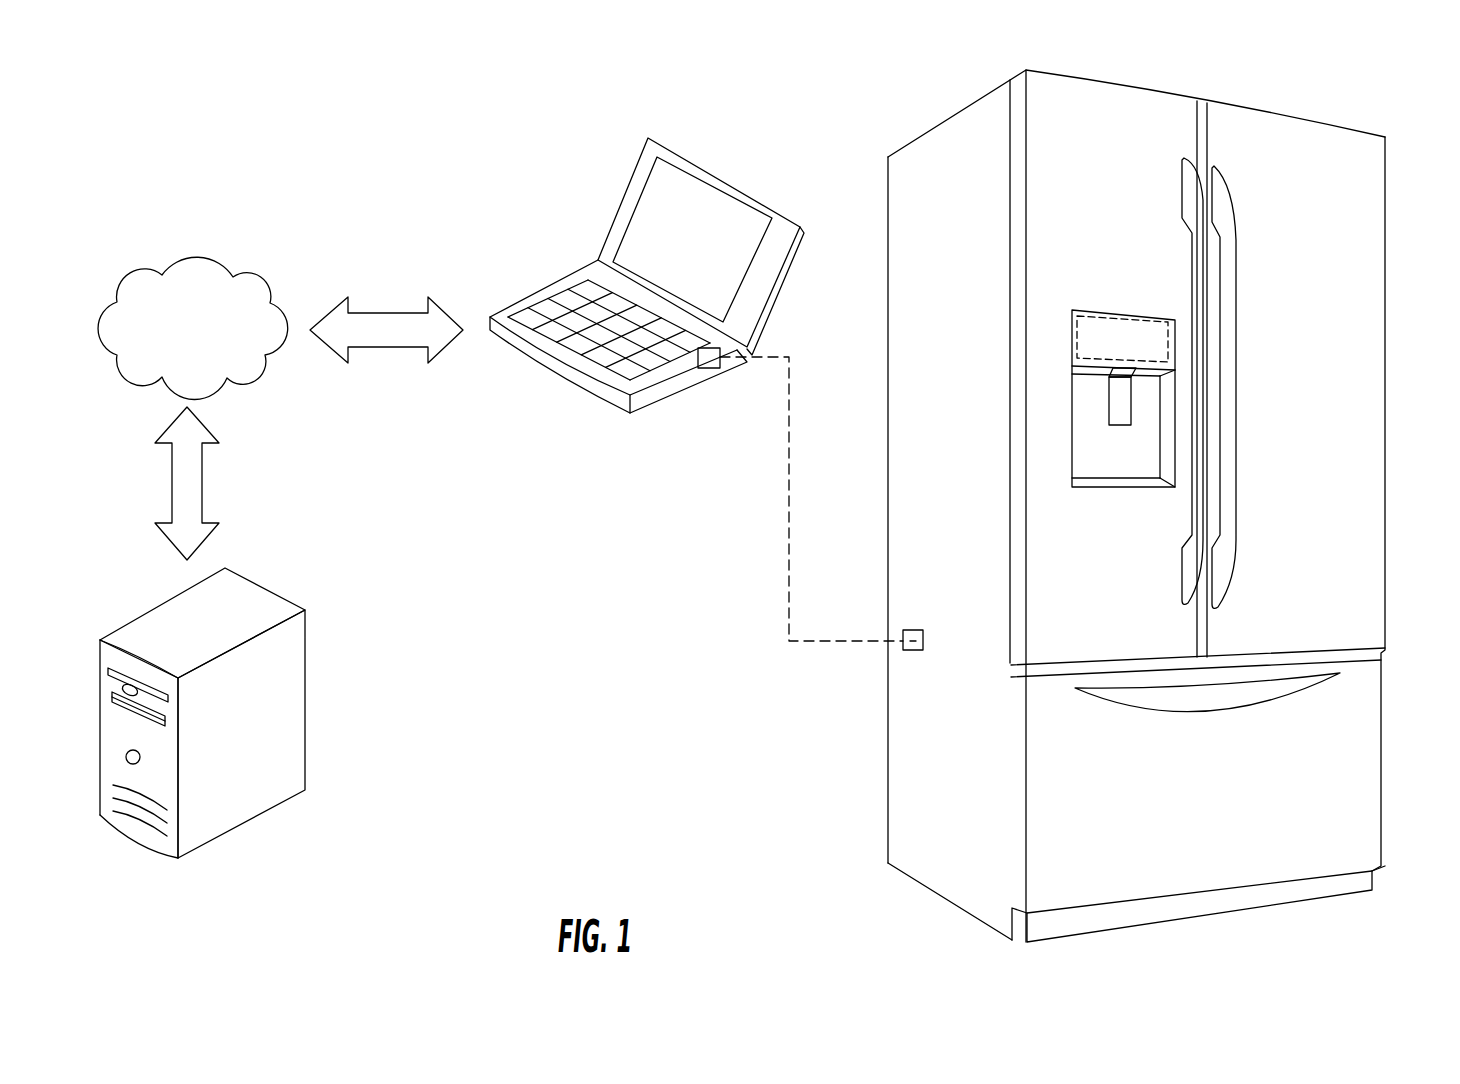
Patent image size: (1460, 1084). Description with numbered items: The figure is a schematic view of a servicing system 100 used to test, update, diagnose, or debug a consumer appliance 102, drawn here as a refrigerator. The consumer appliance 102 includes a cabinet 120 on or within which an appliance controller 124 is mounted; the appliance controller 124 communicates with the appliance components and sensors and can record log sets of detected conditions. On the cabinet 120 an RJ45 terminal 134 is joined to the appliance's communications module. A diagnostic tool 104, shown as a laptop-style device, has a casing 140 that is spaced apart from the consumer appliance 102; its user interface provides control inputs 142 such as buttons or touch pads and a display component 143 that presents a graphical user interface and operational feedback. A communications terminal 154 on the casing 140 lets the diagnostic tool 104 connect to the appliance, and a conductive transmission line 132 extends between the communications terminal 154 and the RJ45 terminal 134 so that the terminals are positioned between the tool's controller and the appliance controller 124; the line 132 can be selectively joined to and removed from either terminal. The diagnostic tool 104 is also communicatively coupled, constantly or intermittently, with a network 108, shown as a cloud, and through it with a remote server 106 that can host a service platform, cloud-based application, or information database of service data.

The servicing system 100 is at (262, 132).
The consumer appliance 102 is at (1365, 99).
The diagnostic tool 104 is at (622, 118).
The remote server 106 is at (318, 772).
The network 108 is at (212, 343).
The cabinet 120 is at (945, 145).
The appliance controller 124 is at (1057, 332).
The conductive transmission line 132 is at (789, 537).
The RJ45 terminal 134 is at (910, 630).
The casing 140 is at (565, 377).
The control inputs 142 is at (553, 307).
The display component 143 is at (648, 215).
The communications terminal 154 is at (705, 377).